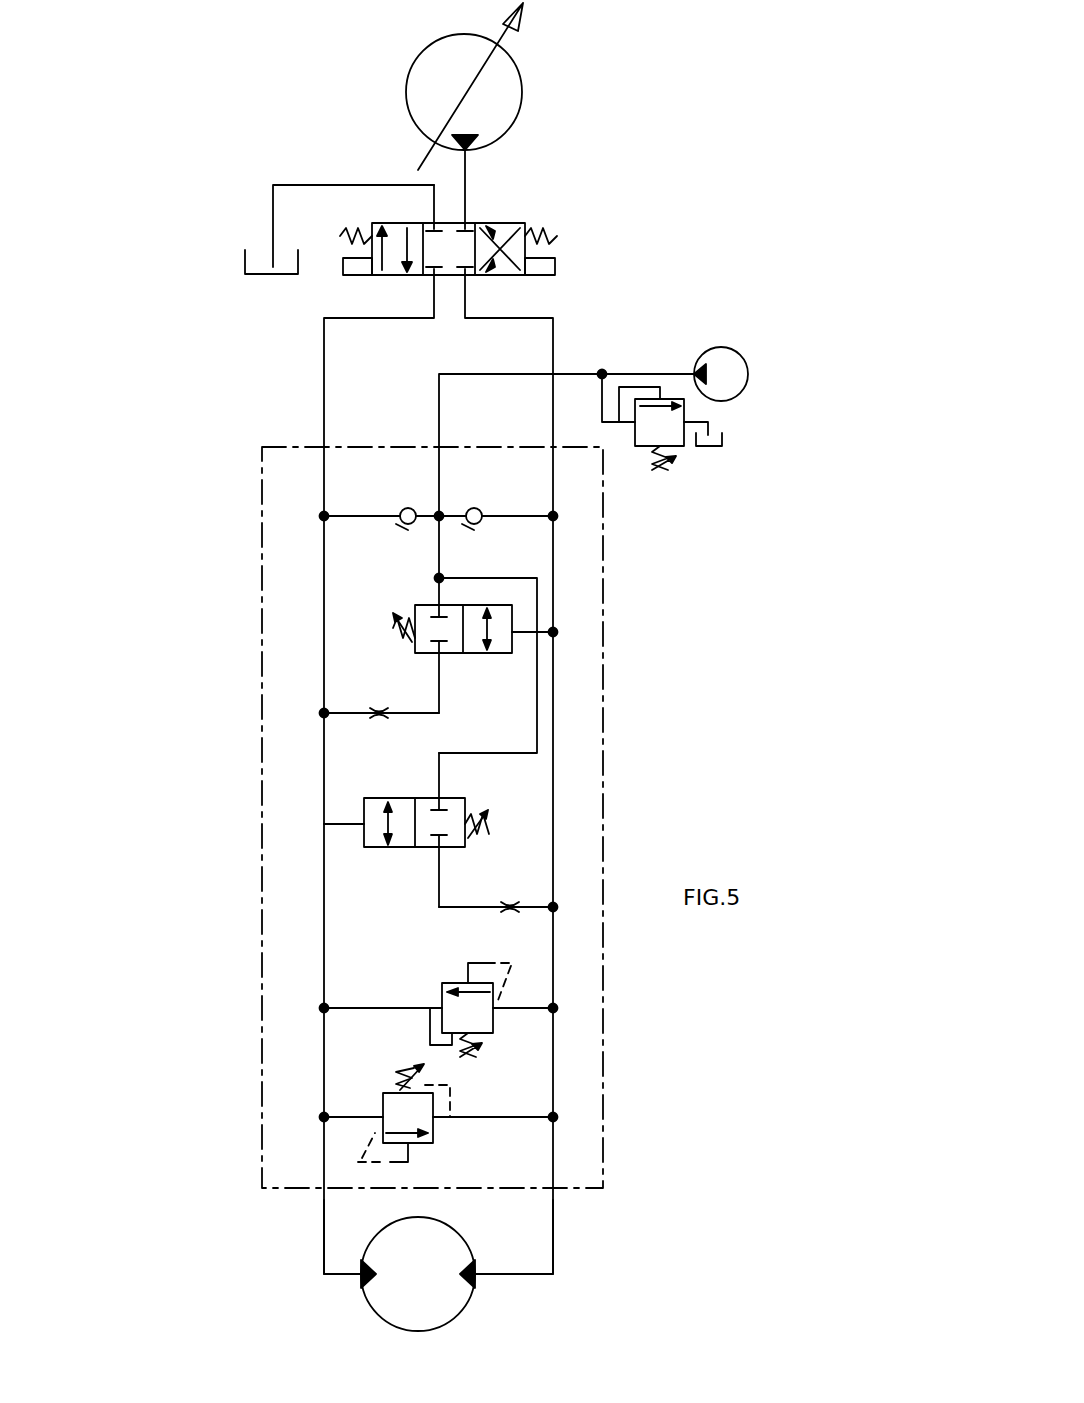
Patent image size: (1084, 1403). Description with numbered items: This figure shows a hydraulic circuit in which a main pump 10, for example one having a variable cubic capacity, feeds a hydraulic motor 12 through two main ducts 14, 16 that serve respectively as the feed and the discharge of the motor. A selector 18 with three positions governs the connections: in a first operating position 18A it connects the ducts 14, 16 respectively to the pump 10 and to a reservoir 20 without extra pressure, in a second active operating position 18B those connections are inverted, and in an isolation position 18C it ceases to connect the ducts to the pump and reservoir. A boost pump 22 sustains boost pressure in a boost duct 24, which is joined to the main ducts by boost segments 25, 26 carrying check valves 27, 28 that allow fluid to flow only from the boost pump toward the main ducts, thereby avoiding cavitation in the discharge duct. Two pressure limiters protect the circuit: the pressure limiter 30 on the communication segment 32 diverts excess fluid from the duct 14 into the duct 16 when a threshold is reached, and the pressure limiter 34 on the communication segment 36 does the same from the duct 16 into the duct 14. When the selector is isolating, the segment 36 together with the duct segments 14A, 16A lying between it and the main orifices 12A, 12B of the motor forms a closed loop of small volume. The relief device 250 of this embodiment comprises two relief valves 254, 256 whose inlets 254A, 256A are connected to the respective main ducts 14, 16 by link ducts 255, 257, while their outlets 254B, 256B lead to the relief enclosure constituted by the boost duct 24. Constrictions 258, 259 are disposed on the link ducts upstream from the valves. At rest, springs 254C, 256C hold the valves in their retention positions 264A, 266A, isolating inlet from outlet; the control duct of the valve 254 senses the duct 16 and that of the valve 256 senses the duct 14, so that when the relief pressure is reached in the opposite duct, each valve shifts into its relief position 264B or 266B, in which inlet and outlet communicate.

The main pump 10 is at (522, 90).
The hydraulic motor 12 is at (445, 1222).
The main orifice of the motor 12A is at (358, 1276).
The main orifice of the motor 12B is at (478, 1276).
The main duct 14 is at (324, 932).
The segment of duct 14 14A is at (324, 1230).
The main duct 16 is at (553, 964).
The segment of duct 16 16A is at (553, 1232).
The selector 18 is at (533, 212).
The first operating position 18A is at (494, 276).
The second active operating position 18B is at (411, 278).
The isolation position 18C is at (447, 276).
The reservoir 20 is at (272, 278).
The boost pump 22 is at (718, 347).
The boost duct 24 is at (496, 374).
The boost segment 25 is at (360, 514).
The boost segment 26 is at (502, 514).
The check valve 27 is at (403, 509).
The check valve 28 is at (468, 509).
The pressure limiter 30 is at (383, 1096).
The communication segment 32 is at (490, 1119).
The pressure limiter 34 is at (493, 1012).
The communication segment 36 is at (380, 1010).
The relief device 250 is at (567, 690).
The relief valve 254 is at (420, 598).
The inlet of valve 254 254A is at (437, 660).
The outlet of valve 254 254B is at (445, 600).
The spring of valve 254 254C is at (390, 628).
The link duct 255 is at (441, 688).
The relief valve 256 is at (410, 855).
The inlet of valve 256 256A is at (441, 855).
The outlet of valve 256 256B is at (439, 795).
The spring of valve 256 256C is at (510, 826).
The link duct 257 is at (462, 910).
The constriction 258 is at (380, 722).
The constriction 259 is at (512, 915).
The retention position of valve 254 264A is at (408, 597).
The relief position of valve 254 264B is at (512, 598).
The retention position of valve 256 266A is at (450, 797).
The relief position of valve 256 266B is at (372, 850).